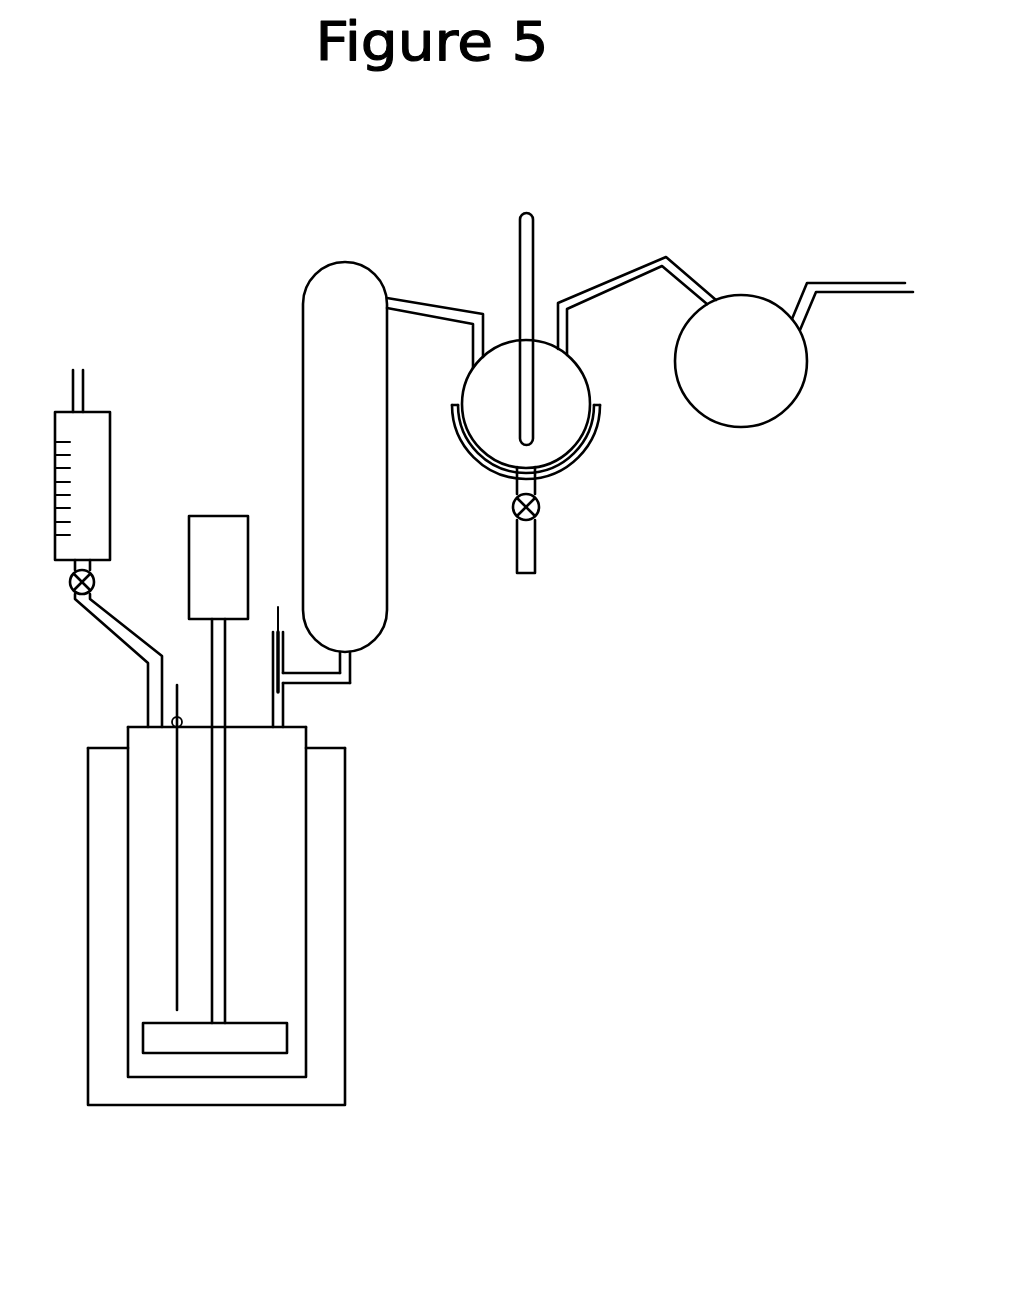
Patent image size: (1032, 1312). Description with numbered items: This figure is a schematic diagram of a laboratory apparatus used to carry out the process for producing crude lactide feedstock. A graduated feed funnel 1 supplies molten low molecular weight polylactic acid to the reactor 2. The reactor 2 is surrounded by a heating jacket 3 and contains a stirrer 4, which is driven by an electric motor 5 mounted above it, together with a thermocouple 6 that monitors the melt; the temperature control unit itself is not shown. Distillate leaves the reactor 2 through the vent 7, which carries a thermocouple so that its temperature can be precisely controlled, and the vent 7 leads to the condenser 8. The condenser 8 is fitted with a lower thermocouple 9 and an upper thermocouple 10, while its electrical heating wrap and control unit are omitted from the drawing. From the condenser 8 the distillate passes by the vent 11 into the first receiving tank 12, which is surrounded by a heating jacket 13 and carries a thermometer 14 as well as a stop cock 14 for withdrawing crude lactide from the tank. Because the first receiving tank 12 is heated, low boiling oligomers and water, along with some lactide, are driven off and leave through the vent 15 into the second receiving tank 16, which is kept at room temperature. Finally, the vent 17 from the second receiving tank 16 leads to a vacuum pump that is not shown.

The graduated feed funnel 1 is at (111, 467).
The reactor 2 is at (217, 902).
The heating jacket 3 is at (322, 863).
The stirrer 4 is at (223, 1022).
The electric motor 5 is at (218, 769).
The thermocouple 6 is at (163, 847).
The vent 7 is at (311, 667).
The condenser 8 is at (361, 457).
The lower thermocouple 9 is at (387, 565).
The upper thermocouple 10 is at (303, 330).
The vent 11 is at (435, 313).
The first receiving tank 12 is at (526, 417).
The heating jacket 13 is at (592, 437).
The thermometer and stop cock 14 is at (545, 368).
The vent 15 is at (637, 289).
The second receiving tank 16 is at (741, 361).
The vent 17 is at (852, 285).